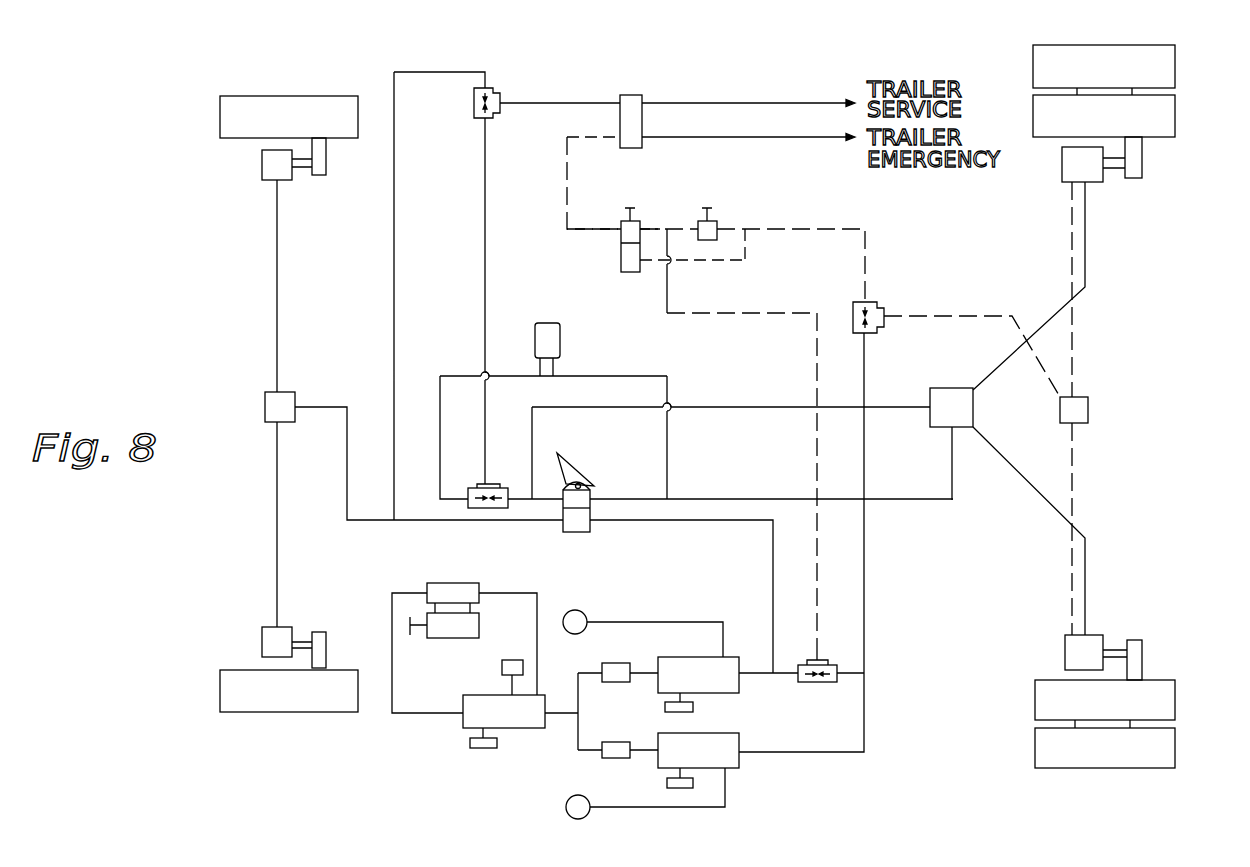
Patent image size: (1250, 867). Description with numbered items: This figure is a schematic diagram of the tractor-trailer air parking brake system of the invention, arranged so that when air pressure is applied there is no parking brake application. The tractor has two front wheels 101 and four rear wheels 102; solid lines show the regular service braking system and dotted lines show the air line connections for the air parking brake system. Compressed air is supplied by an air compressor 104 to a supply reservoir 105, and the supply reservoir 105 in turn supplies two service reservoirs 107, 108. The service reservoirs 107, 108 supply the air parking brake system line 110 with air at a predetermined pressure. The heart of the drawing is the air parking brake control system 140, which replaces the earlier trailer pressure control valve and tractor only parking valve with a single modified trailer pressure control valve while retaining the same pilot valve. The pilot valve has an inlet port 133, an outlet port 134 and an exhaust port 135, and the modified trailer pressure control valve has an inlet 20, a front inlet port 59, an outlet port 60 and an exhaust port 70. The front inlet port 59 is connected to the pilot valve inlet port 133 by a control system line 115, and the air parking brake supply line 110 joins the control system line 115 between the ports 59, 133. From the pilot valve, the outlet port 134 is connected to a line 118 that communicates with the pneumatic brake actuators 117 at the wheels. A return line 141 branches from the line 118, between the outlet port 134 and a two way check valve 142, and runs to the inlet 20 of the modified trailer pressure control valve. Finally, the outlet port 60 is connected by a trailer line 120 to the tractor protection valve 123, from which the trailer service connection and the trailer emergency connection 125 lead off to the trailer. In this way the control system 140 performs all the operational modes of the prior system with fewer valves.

The inlet 20 is at (642, 263).
The front inlet port 59 is at (623, 222).
The outlet port 60 is at (619, 230).
The exhaust port 70 is at (621, 262).
The front wheels 101 is at (237, 108).
The rear wheels 102 is at (1177, 110).
The air compressor 104 is at (455, 588).
The supply reservoir 105 is at (525, 728).
The service reservoir 107 is at (722, 672).
The service reservoir 108 is at (730, 760).
The air parking brake system line 110 is at (742, 315).
The control system line 115 is at (667, 228).
The pneumatic brake actuators 117 is at (1067, 183).
The line 118 is at (900, 315).
The trailer line 120 is at (565, 174).
The tractor protection valve 123 is at (633, 95).
The trailer emergency line 125 is at (743, 137).
The inlet port 133 is at (699, 224).
The outlet port 134 is at (716, 224).
The exhaust port 135 is at (708, 242).
The air parking brake control system 140 is at (784, 194).
The return line 141 is at (742, 262).
The two way check valve 142 is at (874, 331).